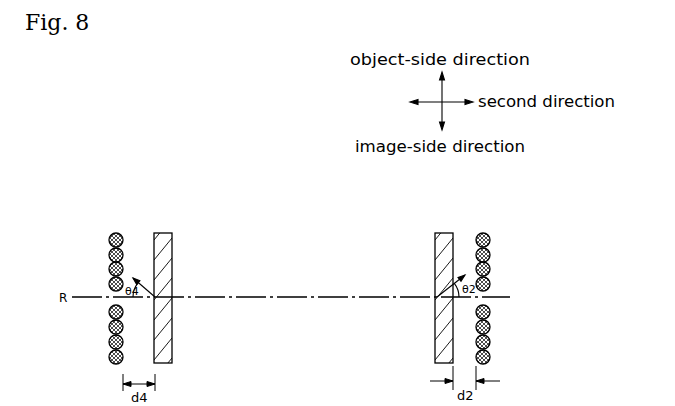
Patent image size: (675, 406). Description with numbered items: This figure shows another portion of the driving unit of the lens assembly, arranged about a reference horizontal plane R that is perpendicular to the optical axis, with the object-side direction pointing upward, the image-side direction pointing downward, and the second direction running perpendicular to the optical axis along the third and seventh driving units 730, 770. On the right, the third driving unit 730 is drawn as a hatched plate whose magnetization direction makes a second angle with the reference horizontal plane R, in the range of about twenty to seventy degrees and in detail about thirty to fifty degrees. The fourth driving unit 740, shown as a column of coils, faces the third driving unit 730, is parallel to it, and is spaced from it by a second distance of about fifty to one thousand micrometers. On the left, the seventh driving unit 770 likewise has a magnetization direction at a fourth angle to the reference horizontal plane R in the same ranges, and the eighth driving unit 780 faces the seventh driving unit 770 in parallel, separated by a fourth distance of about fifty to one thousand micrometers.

The third driving unit 730 is at (440, 231).
The fourth driving unit 740 is at (482, 231).
The seventh driving unit 770 is at (165, 231).
The eighth driving unit 780 is at (109, 356).